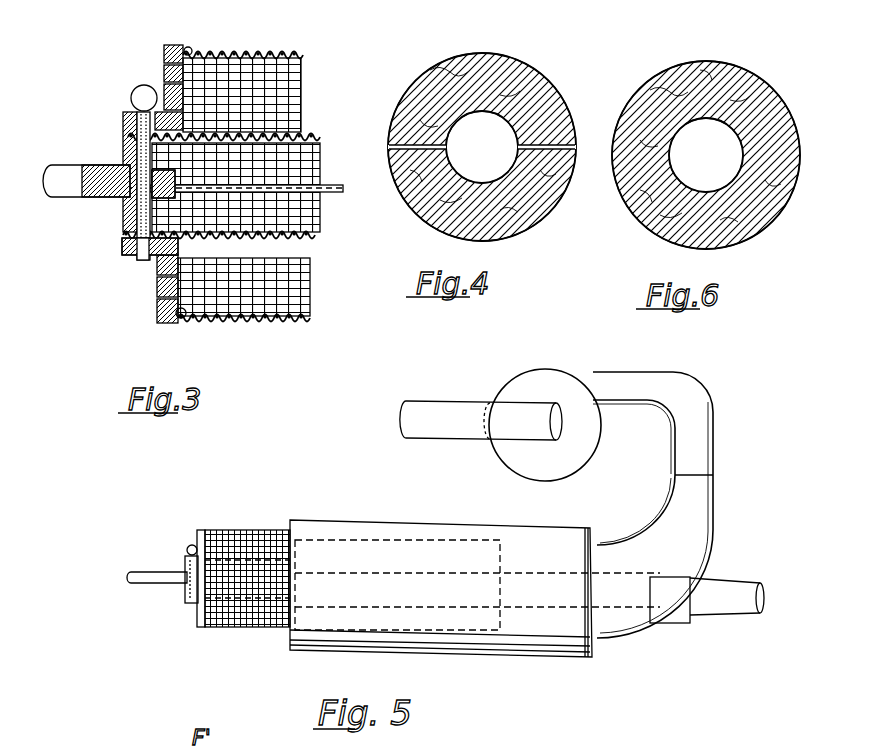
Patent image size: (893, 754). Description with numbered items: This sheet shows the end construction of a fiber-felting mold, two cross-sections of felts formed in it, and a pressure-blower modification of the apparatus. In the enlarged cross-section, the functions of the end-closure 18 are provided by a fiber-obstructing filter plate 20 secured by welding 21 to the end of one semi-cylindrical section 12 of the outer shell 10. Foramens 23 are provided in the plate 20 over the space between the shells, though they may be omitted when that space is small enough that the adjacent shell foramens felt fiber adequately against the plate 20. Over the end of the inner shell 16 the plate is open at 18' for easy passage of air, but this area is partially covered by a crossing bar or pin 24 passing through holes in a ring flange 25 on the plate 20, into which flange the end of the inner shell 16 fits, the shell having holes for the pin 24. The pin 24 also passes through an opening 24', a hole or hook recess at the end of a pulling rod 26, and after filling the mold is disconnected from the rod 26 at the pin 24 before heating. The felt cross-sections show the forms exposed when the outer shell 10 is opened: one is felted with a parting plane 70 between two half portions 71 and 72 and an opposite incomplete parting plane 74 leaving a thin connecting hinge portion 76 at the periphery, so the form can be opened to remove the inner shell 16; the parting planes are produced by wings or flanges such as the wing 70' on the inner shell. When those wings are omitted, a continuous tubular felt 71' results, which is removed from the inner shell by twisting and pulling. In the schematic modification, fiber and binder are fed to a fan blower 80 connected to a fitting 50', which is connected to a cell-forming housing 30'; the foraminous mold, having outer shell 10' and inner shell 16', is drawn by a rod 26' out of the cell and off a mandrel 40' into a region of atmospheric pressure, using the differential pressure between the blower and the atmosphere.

In FIG. 3, the outer shell 10 is at (243, 36).
In FIG. 3, the section 12 is at (292, 79).
In FIG. 3, the inner shell 16 is at (240, 123).
In FIG. 3, the end-closure 18 is at (138, 321).
In FIG. 3, the open area 18' is at (176, 239).
In FIG. 3, the filter plate 20 is at (172, 44).
In FIG. 3, the welding 21 is at (160, 360).
In FIG. 3, the foramens 23 is at (165, 83).
In FIG. 3, the pin 24 is at (119, 96).
In FIG. 3, the opening 24' is at (111, 186).
In FIG. 3, the ring flange 25 is at (122, 250).
In FIG. 3, the pulling rod 26 is at (109, 162).
In FIG. 4, the parting plane 70 is at (495, 147).
In FIG. 3, the wing 70' is at (207, 209).
In FIG. 4, the half portion 71 is at (489, 121).
In FIG. 6, the continuous tubular felt 71' is at (706, 145).
In FIG. 4, the half portion 72 is at (552, 214).
In FIG. 4, the incomplete parting plane 74 is at (437, 143).
In FIG. 4, the hinge portion 76 is at (386, 145).
In FIG. 5, the outer shell 10' is at (243, 559).
In FIG. 5, the inner shell 16' is at (247, 613).
In FIG. 5, the rod 26' is at (157, 583).
In FIG. 5, the cell-forming housing 30' is at (475, 605).
In FIG. 5, the mandrel 40' is at (707, 619).
In FIG. 5, the fitting 50' is at (678, 505).
In FIG. 5, the fan blower 80 is at (580, 454).